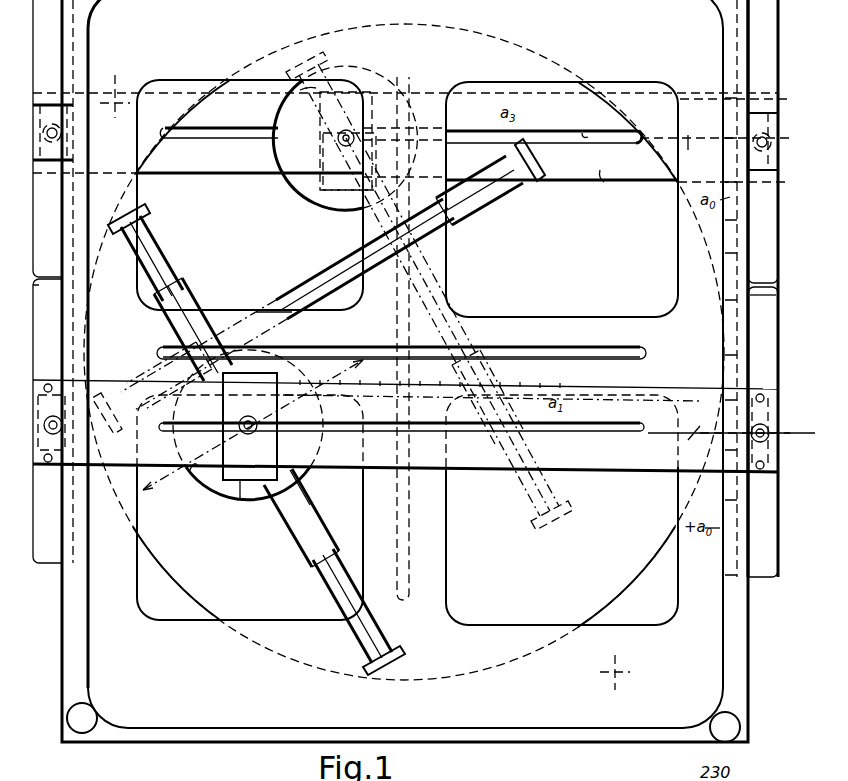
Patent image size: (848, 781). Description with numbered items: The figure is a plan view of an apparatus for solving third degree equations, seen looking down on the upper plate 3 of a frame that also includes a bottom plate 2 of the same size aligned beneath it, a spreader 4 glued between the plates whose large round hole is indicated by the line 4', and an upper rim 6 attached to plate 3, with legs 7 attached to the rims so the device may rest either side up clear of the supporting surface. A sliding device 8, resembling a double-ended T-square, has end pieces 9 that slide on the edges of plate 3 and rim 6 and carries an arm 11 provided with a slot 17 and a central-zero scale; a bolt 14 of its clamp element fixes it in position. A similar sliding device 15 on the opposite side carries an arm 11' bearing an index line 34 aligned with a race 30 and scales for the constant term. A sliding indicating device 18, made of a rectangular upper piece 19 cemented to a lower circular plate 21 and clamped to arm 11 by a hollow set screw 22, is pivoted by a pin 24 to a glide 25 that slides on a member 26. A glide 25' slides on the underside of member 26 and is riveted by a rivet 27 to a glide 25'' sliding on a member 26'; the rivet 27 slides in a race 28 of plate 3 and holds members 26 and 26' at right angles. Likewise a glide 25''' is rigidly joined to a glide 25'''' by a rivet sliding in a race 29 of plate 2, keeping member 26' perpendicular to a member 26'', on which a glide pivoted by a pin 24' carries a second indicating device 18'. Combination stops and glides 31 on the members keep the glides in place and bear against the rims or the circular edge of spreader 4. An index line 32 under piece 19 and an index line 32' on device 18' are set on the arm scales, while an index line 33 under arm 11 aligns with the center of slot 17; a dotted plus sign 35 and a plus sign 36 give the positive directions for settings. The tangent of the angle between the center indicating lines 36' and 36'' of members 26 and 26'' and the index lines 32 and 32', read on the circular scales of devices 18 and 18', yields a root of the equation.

The bottom plate 2 is at (555, 338).
The upper plate 3 is at (162, 735).
The spreader 4 is at (416, 364).
The line indicating round hole of spreader 4' is at (444, 352).
The upper rim 6 is at (72, 613).
The legs 7 is at (75, 715).
The sliding device 8 is at (782, 350).
The end pieces 9 is at (770, 318).
The arm 11 is at (424, 416).
The arm of sliding device 15 11' is at (614, 187).
The bolt 14 is at (766, 428).
The sliding device 15 is at (783, 210).
The slot 17 is at (600, 430).
The sliding indicating device 18 is at (181, 480).
The indicating device 18' is at (290, 146).
The rectangular upper piece 19 is at (222, 497).
The lower circular plate 21 is at (231, 501).
The hollow set screw 22 is at (240, 428).
The pin 24 is at (248, 425).
The pin 24' is at (345, 138).
The glide 25 is at (281, 498).
The glide 25' is at (193, 322).
The glide 25'' is at (192, 258).
The glide 25''' is at (365, 259).
The glide 25'''' is at (400, 215).
The member 26 is at (301, 518).
The member 26' is at (399, 215).
The member 26'' is at (340, 324).
The rivet 27 is at (270, 318).
The race 28 is at (373, 352).
The race 29 is at (418, 352).
The race 30 is at (582, 133).
The combination stops and glides 31 is at (150, 212).
The index line 32 is at (225, 437).
The index line 32' is at (327, 178).
The index line 33 is at (700, 435).
The index line 34 is at (690, 140).
The dotted plus sign 35 is at (622, 668).
The plus sign 36 is at (115, 87).
The center indicating line 36' is at (331, 606).
The center indicating line 36'' is at (447, 280).